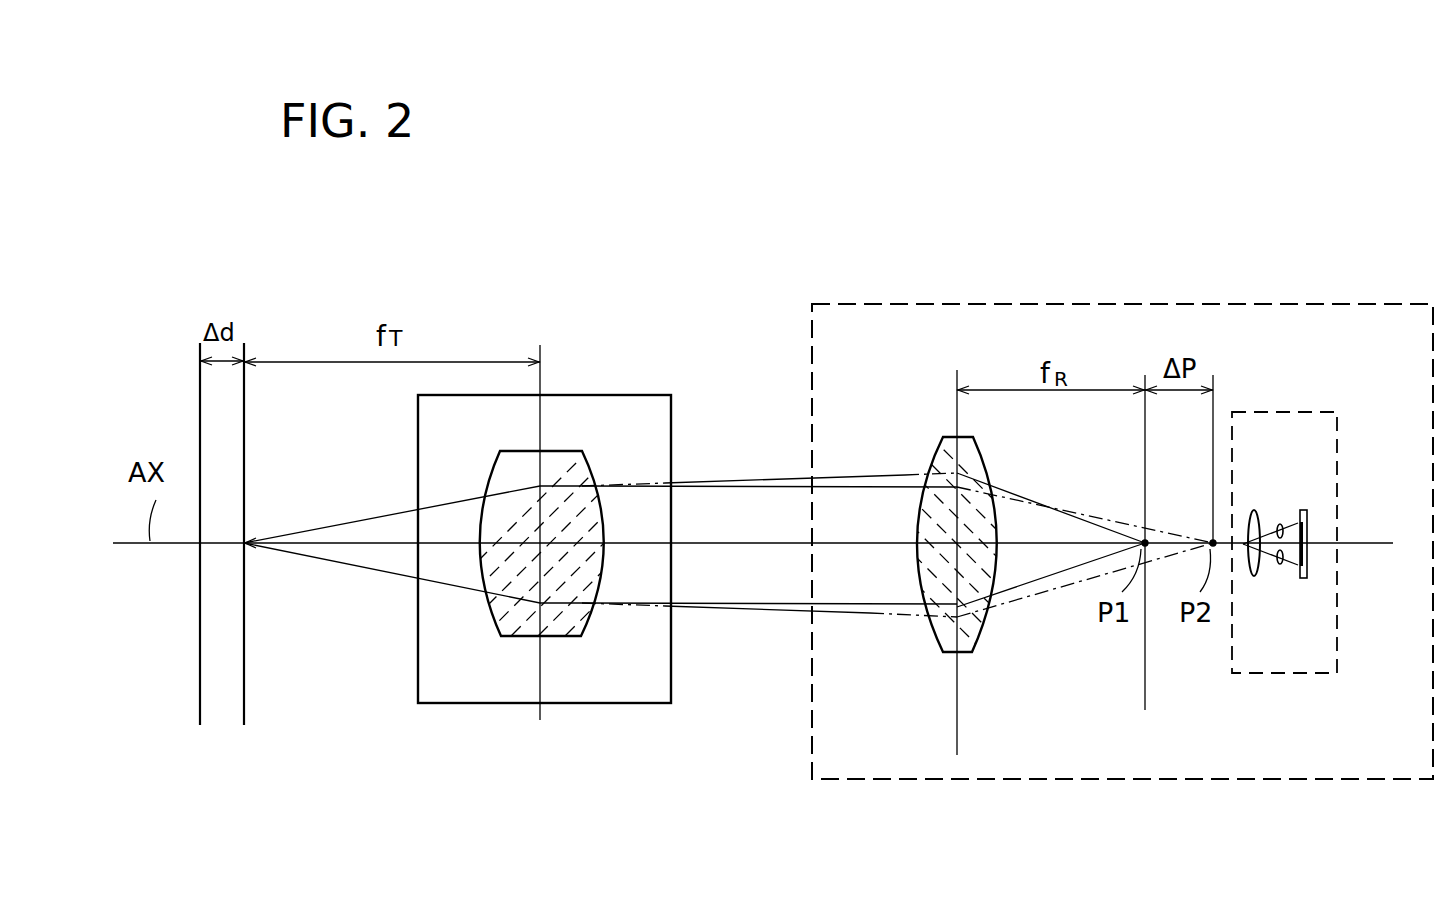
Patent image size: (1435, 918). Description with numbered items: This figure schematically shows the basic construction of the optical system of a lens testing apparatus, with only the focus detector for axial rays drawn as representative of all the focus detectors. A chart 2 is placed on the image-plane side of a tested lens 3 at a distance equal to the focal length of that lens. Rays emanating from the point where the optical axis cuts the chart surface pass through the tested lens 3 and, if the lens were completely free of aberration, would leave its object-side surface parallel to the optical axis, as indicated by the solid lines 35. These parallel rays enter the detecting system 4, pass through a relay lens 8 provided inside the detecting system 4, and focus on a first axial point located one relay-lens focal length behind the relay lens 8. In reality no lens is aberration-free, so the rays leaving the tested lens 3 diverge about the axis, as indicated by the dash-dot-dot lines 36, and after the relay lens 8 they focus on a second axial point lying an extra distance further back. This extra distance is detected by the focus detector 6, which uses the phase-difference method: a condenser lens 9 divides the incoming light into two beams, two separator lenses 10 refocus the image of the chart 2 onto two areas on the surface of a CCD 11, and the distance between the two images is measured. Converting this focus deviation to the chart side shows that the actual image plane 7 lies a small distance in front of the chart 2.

The chart 2 is at (244, 668).
The tested lens 3 is at (627, 395).
The detecting system 4 is at (812, 752).
The focus detector 6 is at (1284, 586).
The actual image plane 7 is at (200, 667).
The relay lens 8 is at (975, 636).
The condenser lens 9 is at (1253, 512).
The separator lenses 10 is at (1280, 566).
The CCD 11 is at (1303, 508).
The solid lines 35 is at (762, 491).
The dash-dot-dot lines 36 is at (742, 479).